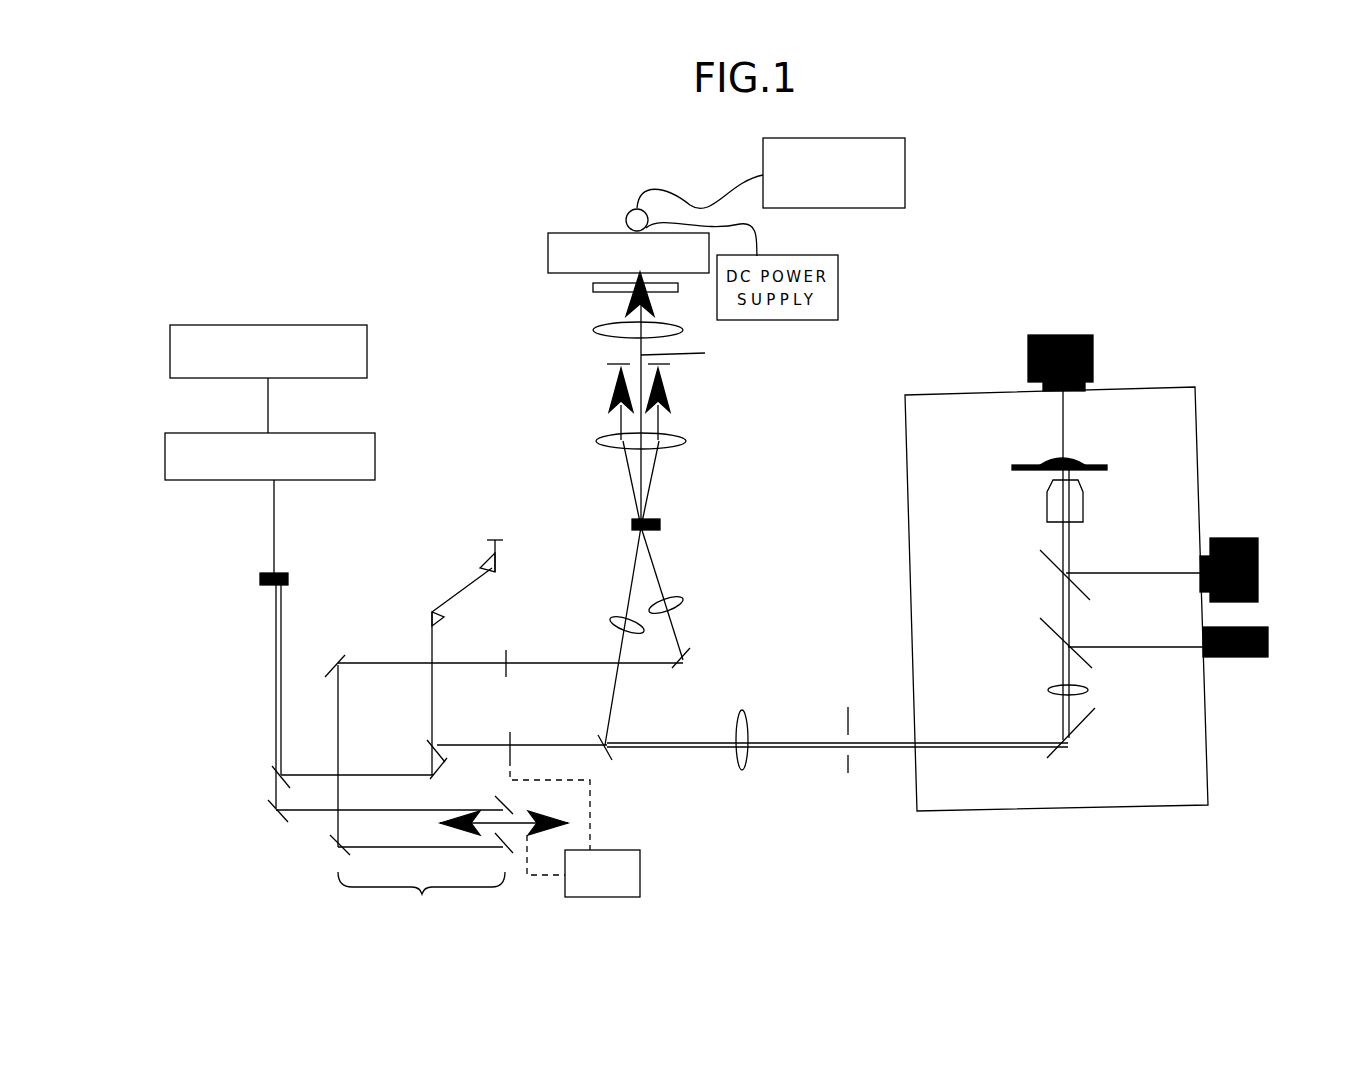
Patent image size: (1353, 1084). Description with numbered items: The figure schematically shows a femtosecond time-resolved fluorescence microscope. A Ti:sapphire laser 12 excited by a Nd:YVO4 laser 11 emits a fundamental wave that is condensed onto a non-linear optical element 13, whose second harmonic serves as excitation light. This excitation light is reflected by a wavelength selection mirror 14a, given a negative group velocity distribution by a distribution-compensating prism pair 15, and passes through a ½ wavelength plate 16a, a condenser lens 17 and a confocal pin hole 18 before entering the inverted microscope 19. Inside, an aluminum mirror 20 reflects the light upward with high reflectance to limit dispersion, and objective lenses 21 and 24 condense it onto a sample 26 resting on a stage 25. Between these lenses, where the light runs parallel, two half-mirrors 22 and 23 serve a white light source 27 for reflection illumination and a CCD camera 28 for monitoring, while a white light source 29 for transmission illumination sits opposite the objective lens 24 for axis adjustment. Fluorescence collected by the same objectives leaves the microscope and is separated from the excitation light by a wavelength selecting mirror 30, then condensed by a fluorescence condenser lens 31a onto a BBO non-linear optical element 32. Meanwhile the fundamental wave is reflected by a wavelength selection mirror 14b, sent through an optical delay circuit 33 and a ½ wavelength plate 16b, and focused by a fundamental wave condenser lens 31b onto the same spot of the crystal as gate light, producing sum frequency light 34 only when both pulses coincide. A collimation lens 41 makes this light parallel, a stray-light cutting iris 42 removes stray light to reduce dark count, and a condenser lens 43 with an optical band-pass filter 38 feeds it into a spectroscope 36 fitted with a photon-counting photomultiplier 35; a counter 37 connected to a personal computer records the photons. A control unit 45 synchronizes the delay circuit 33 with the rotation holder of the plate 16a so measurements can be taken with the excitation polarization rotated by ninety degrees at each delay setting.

The Nd:YVO4 laser 11 is at (307, 328).
The Ti:sapphire laser 12 is at (316, 433).
The non-linear optical element 13 is at (261, 573).
The wavelength selection mirror 14a is at (275, 769).
The wavelength selection mirror 14b is at (271, 808).
The distribution-compensating prism pair 15 is at (487, 527).
The ½ wavelength plate 16a is at (515, 738).
The ½ wavelength plate 16b is at (510, 660).
The condenser lens 17 is at (745, 720).
The confocal pin hole 18 is at (851, 715).
The inverted microscope 19 is at (893, 547).
The aluminum mirror 20 is at (1080, 723).
The objective lens 21 is at (1046, 689).
The half-mirror 22 is at (1045, 633).
The half-mirror 23 is at (1042, 554).
The objective lens 24 is at (1045, 502).
The stage 25 is at (1098, 462).
The sample 26 is at (1058, 458).
The white light source 27 is at (1243, 537).
The CCD camera 28 is at (1237, 660).
The white light source 29 is at (1082, 332).
The wavelength selecting mirror 30 is at (612, 760).
The fluorescence condenser lens 31a is at (612, 618).
The fundamental wave condenser lens 31b is at (680, 598).
The non-linear optical element 32 is at (660, 521).
The optical delay circuit 33 is at (449, 796).
The sum frequency light 34 is at (688, 352).
The photon-counting photomultiplier 35 is at (628, 213).
The spectroscope 36 is at (548, 236).
The counter 37 is at (906, 170).
The optical band-pass filter 38 is at (592, 287).
The collimation lens 41 is at (598, 441).
The stray-light cutting iris 42 is at (608, 370).
The condenser lens 43 is at (596, 325).
The control unit 45 is at (642, 862).